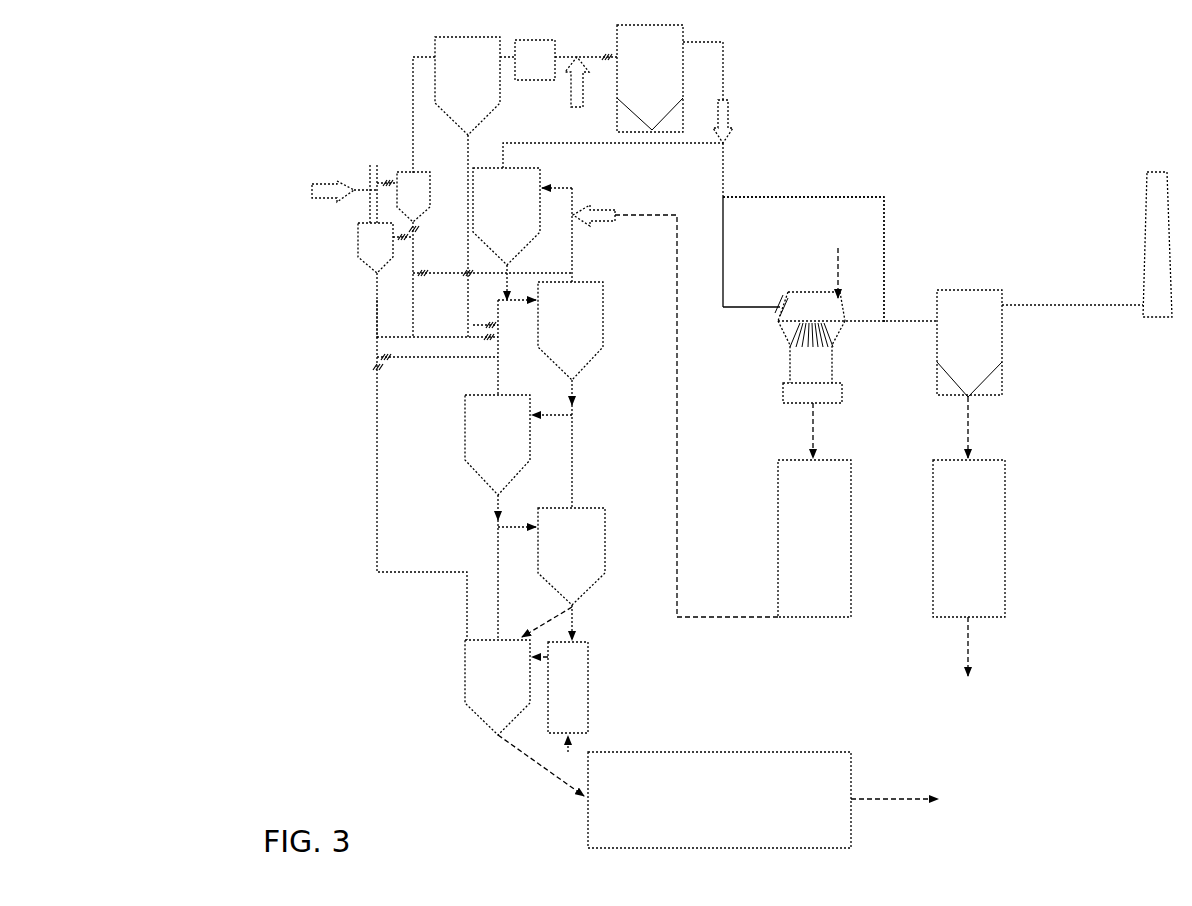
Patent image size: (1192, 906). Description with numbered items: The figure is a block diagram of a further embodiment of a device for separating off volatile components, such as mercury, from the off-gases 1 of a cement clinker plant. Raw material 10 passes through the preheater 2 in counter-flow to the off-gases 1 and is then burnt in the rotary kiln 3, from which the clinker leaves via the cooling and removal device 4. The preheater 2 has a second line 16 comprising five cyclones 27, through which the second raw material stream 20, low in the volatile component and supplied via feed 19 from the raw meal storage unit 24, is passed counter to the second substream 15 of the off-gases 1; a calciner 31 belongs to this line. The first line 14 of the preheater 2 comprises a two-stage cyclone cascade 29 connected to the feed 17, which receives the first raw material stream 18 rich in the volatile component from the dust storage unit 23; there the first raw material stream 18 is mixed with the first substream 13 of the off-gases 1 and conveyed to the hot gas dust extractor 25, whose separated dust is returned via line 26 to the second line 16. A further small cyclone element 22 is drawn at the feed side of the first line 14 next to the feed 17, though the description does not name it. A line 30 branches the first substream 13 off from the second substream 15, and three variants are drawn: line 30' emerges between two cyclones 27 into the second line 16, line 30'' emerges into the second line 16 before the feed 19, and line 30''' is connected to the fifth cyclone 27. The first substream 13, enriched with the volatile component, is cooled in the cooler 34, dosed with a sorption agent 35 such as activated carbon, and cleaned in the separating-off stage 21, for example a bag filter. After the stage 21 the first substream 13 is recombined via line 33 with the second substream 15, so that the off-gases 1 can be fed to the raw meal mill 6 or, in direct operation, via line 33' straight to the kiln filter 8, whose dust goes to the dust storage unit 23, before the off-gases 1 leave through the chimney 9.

The off-gases 1 is at (723, 173).
The preheater 2 is at (597, 414).
The rotary kiln 3 is at (710, 762).
The cooling and removal device 4 is at (882, 798).
The raw meal mill 6 is at (795, 372).
The kiln filter 8 is at (963, 288).
The chimney 9 is at (1157, 233).
The raw material 10 is at (727, 63).
The first substream of off-gases 13 is at (457, 337).
The first line of the preheater 14 is at (342, 224).
The second substream of off-gases 15 is at (593, 147).
The second line of the preheater 16 is at (617, 583).
The feed 17 is at (342, 183).
The first raw material stream 18 is at (968, 663).
The feed 19 is at (618, 213).
The second raw material stream 20 is at (497, 507).
The stage for separating off the volatile component 21 is at (638, 55).
The feed cyclone 22 is at (412, 173).
The dust storage unit 23 is at (938, 522).
The raw meal storage unit 24 is at (778, 542).
The hot gas dust extractor 25 is at (445, 53).
The line 26 is at (467, 158).
The cyclones 27 is at (545, 233).
The two-stage cyclone cascade 29 is at (575, 397).
The line for branching off the first substream 30 is at (437, 360).
The line for branching off the first substream 30' is at (437, 374).
The line for branching off the first substream 30'' is at (443, 299).
The line for branching off the first substream 30''' is at (355, 392).
The calciner 31 is at (565, 703).
The line 33 is at (803, 259).
The line 33' is at (803, 244).
The cooler 34 is at (528, 73).
The sorption agent 35 is at (573, 64).